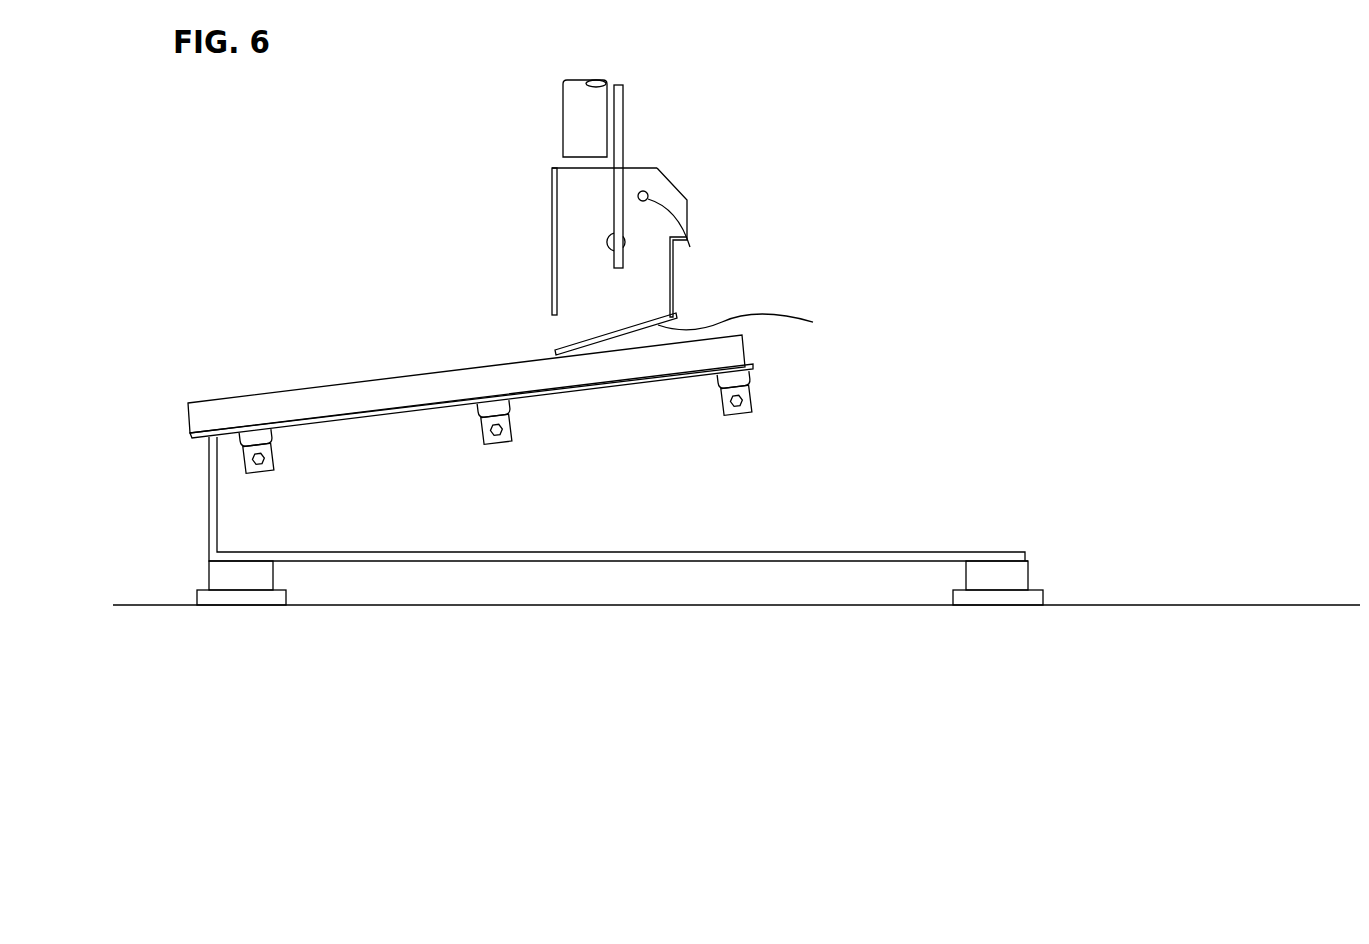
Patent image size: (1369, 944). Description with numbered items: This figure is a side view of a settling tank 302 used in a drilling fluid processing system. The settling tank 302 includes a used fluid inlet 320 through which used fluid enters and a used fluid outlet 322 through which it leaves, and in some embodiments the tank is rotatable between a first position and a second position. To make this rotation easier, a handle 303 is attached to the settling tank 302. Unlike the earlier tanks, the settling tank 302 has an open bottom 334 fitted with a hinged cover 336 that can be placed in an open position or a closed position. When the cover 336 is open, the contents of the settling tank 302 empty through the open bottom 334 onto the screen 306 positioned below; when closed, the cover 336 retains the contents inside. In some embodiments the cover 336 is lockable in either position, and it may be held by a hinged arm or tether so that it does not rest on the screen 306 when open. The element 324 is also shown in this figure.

The settling tank 302 is at (621, 185).
The handle 303 is at (620, 102).
The screen 306 is at (285, 363).
The used fluid inlet 320 is at (540, 157).
The used fluid outlet 322 is at (741, 227).
The pivot link 324 is at (672, 205).
The open bottom 334 is at (540, 325).
The hinged cover 336 is at (760, 328).